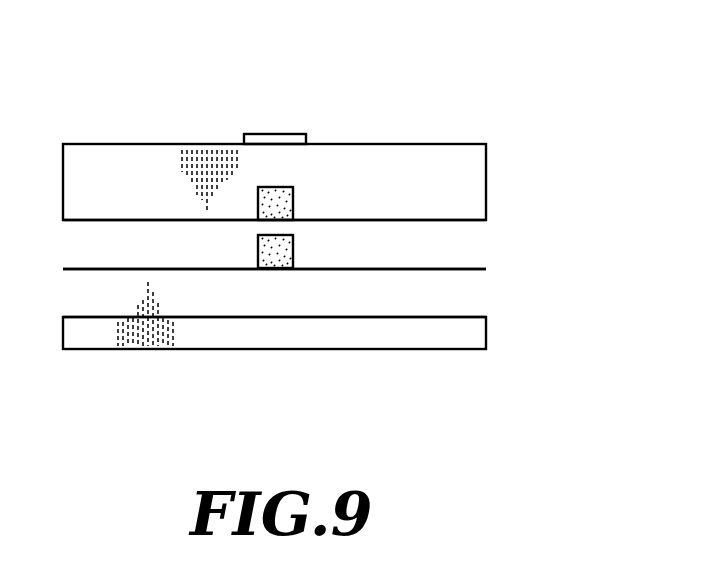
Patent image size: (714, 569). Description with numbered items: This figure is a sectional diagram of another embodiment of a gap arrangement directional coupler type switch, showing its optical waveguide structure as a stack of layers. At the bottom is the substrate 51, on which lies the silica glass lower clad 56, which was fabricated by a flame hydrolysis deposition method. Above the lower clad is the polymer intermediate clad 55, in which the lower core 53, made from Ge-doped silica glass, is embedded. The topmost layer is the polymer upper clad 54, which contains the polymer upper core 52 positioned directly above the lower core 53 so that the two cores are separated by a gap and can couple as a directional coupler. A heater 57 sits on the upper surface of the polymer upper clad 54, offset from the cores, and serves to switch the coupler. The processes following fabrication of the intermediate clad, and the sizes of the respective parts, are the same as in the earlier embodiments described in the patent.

The substrate 51 is at (463, 333).
The polymer upper core 52 is at (293, 203).
The lower core 53 is at (293, 256).
The polymer upper clad 54 is at (463, 190).
The polymer intermediate clad 55 is at (463, 250).
The silica glass lower clad 56 is at (463, 305).
The heater 57 is at (272, 133).